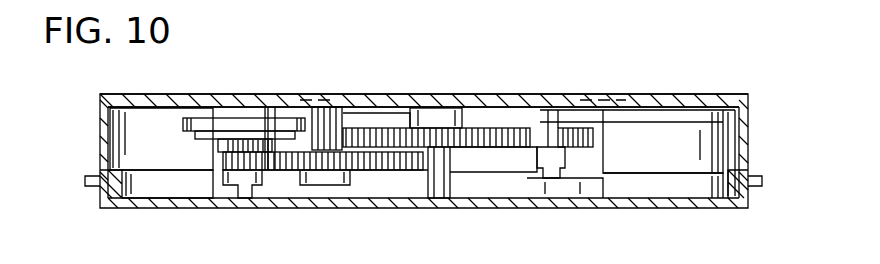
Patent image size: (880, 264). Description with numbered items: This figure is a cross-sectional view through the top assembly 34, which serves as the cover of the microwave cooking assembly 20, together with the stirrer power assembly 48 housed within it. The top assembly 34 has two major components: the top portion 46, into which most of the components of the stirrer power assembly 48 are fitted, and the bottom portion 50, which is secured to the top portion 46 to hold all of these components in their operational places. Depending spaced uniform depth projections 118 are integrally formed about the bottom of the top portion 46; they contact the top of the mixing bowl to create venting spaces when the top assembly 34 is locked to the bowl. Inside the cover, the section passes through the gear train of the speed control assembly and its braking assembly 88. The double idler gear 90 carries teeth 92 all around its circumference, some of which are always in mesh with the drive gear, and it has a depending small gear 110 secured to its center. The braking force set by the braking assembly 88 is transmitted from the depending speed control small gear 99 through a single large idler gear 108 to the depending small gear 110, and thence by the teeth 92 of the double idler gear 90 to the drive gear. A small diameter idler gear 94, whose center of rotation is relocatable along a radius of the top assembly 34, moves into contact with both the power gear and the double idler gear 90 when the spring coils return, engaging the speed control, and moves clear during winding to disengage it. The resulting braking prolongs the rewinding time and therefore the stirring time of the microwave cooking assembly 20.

The microwave cooking assembly 20 is at (689, 86).
The top assembly 34 is at (627, 86).
The top portion 46 is at (513, 107).
The stirrer power assembly 48 is at (379, 180).
The bottom portion 50 is at (555, 208).
The braking assembly 88 is at (201, 105).
The double idler gear 90 is at (394, 118).
The teeth 92 is at (472, 127).
The small diameter idler gear 94 is at (603, 142).
The speed control small gear 99 is at (222, 155).
The single large idler gear 108 is at (300, 171).
The depending small gear 110 is at (346, 112).
The depending spaced uniform depth projections 118 is at (100, 190).